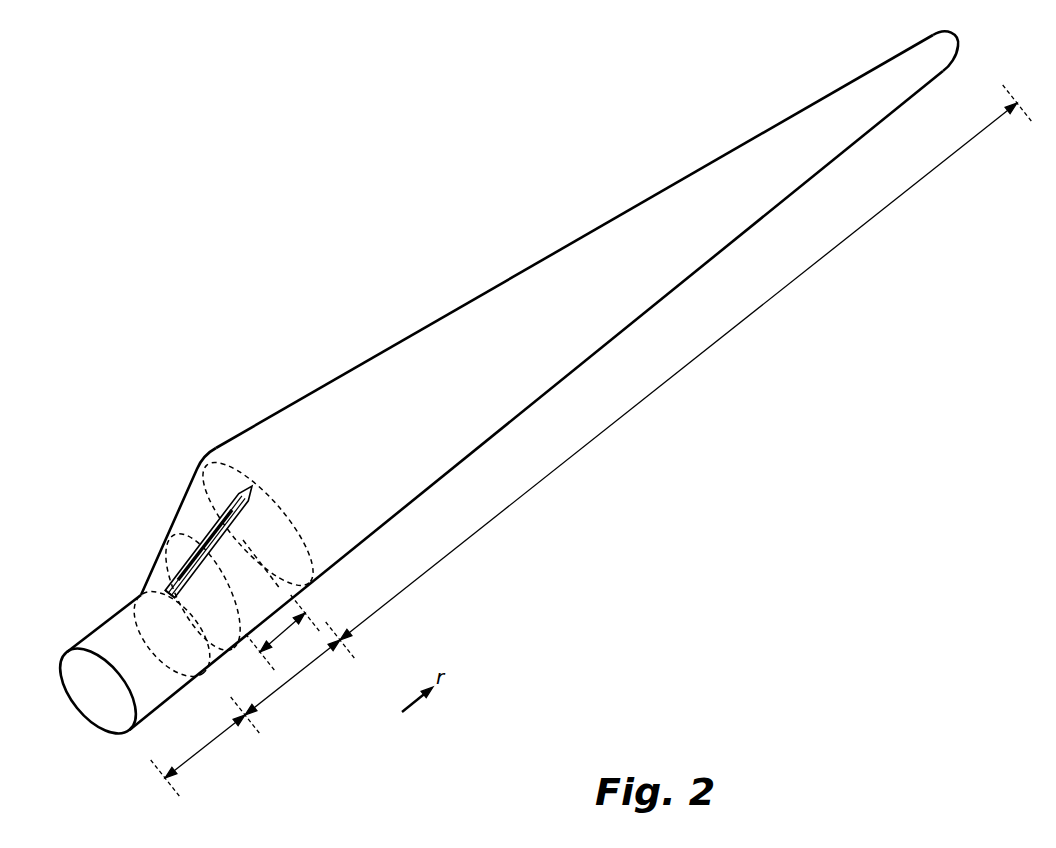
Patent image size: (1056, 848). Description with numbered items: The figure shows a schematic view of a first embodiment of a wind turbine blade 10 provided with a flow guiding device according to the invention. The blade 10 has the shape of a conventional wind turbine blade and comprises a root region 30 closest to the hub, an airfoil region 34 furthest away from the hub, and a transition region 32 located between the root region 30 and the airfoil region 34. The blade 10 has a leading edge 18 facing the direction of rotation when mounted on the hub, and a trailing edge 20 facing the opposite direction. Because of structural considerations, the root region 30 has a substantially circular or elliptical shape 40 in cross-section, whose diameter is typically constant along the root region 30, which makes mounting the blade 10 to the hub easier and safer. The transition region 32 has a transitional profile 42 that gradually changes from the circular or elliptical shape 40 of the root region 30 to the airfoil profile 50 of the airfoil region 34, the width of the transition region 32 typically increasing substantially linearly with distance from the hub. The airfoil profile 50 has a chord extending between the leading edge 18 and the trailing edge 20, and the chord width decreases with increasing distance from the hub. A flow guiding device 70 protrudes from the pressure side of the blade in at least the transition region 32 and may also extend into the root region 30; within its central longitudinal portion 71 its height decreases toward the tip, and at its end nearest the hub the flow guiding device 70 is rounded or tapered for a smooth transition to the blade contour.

The wind turbine blade 10 is at (353, 258).
The leading edge 18 is at (685, 279).
The trailing edge 20 is at (693, 173).
The root region 30 is at (208, 745).
The transition region 32 is at (295, 677).
The airfoil region 34 is at (608, 423).
The circular or elliptical shape 40 is at (130, 608).
The transitional profile 42 is at (188, 542).
The airfoil profile 50 is at (218, 477).
The flow guiding device 70 is at (212, 523).
The central longitudinal portion 71 is at (282, 634).